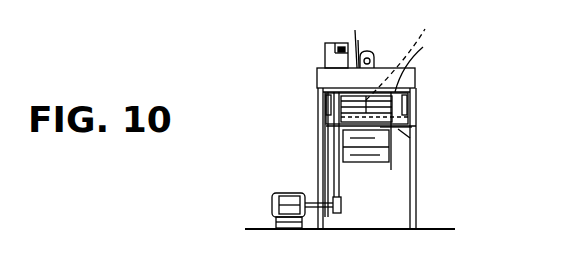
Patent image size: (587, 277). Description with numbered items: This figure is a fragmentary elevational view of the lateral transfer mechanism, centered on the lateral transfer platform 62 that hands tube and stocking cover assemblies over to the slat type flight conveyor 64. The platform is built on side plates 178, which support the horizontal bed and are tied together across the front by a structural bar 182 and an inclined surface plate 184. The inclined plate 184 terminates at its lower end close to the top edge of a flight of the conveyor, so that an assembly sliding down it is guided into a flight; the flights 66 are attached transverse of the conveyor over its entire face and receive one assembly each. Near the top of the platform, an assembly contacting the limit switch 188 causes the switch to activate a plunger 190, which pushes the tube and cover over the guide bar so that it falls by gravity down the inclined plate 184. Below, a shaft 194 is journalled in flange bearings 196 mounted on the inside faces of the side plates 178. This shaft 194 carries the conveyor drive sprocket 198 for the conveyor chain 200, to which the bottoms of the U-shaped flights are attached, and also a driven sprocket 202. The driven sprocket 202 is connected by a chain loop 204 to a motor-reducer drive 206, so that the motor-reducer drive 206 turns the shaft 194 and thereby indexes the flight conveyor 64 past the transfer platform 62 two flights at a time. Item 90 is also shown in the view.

The lateral transfer platform 62 is at (478, 52).
The flight conveyor 64 is at (385, 195).
The flights 66 is at (379, 163).
The pivot lug 90 is at (372, 52).
The side plates 178 is at (416, 165).
The structural bar 182 is at (414, 137).
The inclined surface plate 184 is at (417, 75).
The limit switch 188 is at (333, 56).
The plunger 190 is at (357, 38).
The shaft 194 is at (426, 64).
The flange bearings 196 is at (327, 103).
The conveyor drive sprocket 198 is at (416, 56).
The conveyor chain 200 is at (418, 117).
The driven sprocket 202 is at (328, 88).
The chain loop 204 is at (341, 148).
The motor-reducer drive 206 is at (270, 178).